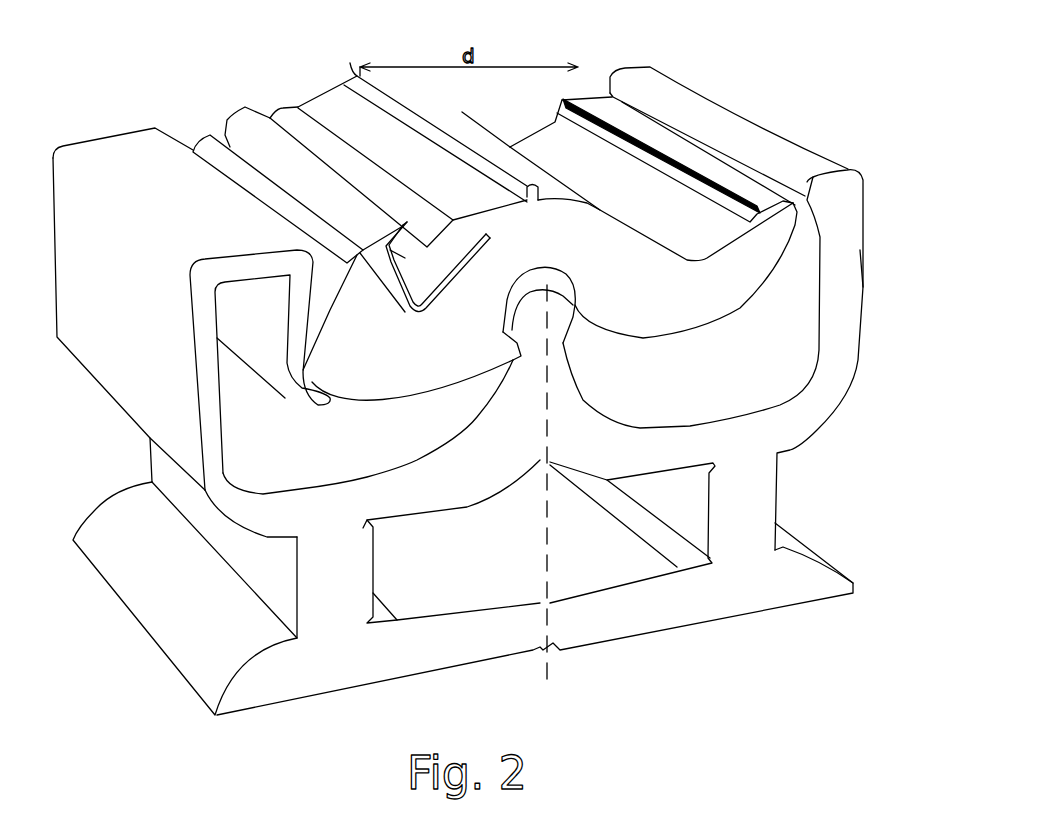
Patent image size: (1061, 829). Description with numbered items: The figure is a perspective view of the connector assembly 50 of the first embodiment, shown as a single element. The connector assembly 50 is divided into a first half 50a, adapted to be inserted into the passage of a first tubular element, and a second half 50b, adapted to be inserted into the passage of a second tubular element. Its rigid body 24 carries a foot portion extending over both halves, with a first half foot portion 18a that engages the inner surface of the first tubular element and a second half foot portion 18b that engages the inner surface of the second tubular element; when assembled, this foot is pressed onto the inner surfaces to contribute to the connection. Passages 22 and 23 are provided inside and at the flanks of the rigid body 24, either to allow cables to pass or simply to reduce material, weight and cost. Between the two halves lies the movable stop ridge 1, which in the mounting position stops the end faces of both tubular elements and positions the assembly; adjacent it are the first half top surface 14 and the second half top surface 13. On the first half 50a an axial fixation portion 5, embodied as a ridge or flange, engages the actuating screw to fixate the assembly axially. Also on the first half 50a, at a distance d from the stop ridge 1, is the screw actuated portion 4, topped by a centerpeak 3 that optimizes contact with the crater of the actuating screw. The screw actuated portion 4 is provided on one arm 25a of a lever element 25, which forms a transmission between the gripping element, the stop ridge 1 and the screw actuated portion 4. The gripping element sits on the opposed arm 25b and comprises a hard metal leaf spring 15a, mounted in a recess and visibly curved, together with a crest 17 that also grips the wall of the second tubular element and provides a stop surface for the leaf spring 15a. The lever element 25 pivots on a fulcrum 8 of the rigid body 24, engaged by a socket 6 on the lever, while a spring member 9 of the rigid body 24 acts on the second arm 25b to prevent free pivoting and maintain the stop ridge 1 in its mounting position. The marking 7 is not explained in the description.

The movable stop ridge 1 is at (358, 61).
The centerpeak 3 is at (759, 220).
The screw actuated portion 4 is at (588, 88).
The axial fixation portion 5 is at (833, 190).
The socket 6 is at (426, 320).
The dome 7 is at (521, 294).
The fulcrum 8 is at (538, 325).
The spring member 9 is at (260, 370).
The second half top surface 13 is at (372, 177).
The first half top surface 14 is at (439, 116).
The leaf spring 15a is at (245, 132).
The crest 17 is at (205, 138).
The first half foot portion 18a is at (710, 611).
The second half foot portion 18b is at (430, 661).
The passage 22 is at (475, 557).
The passage 23 is at (809, 499).
The rigid body 24 is at (521, 400).
The lever element 25 is at (657, 347).
The arm 25a is at (595, 247).
The arm 25b is at (408, 327).
The connector assembly 50 is at (976, 379).
The first half 50a is at (590, 666).
The second half 50b is at (530, 680).